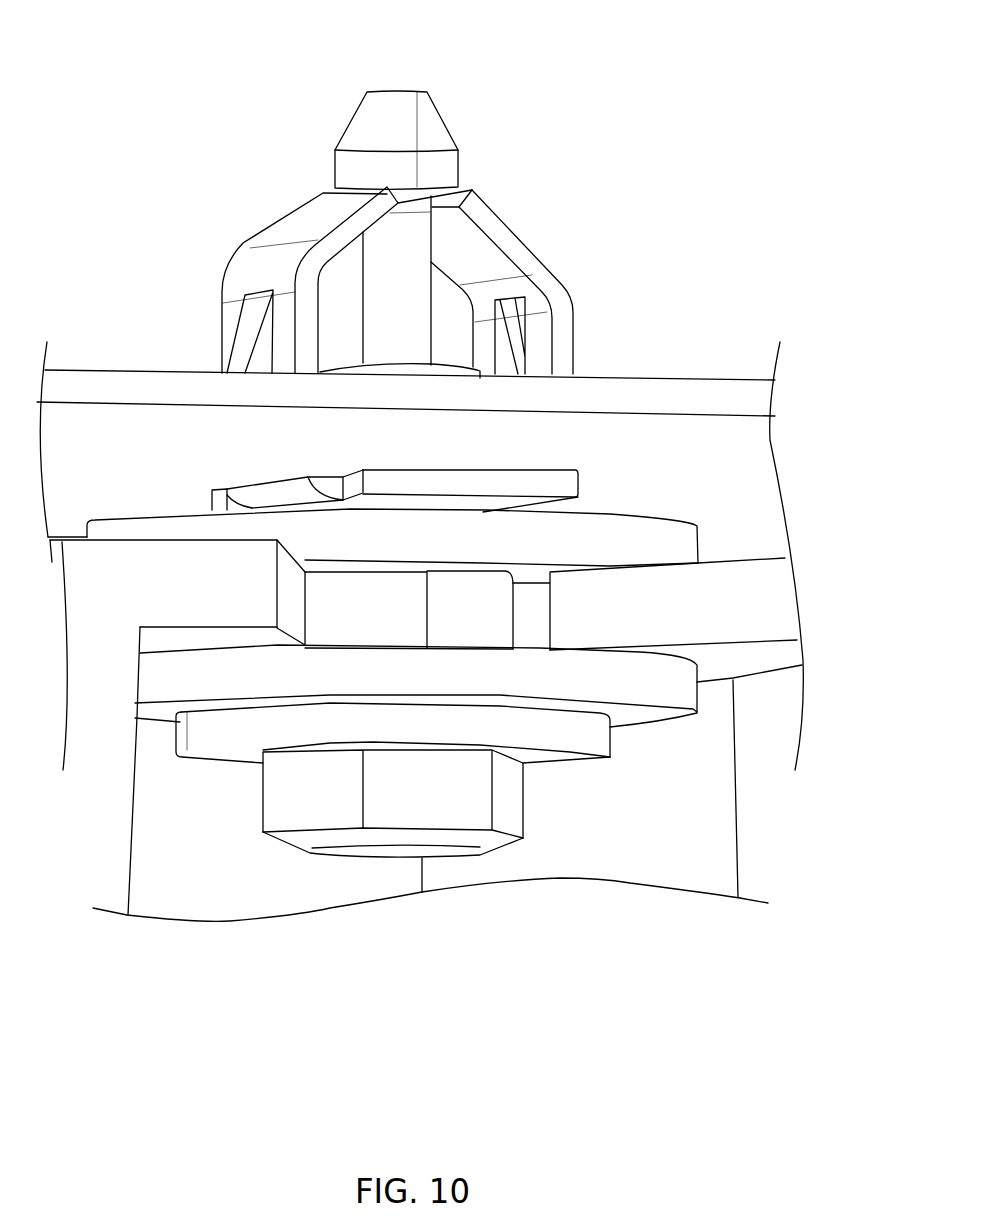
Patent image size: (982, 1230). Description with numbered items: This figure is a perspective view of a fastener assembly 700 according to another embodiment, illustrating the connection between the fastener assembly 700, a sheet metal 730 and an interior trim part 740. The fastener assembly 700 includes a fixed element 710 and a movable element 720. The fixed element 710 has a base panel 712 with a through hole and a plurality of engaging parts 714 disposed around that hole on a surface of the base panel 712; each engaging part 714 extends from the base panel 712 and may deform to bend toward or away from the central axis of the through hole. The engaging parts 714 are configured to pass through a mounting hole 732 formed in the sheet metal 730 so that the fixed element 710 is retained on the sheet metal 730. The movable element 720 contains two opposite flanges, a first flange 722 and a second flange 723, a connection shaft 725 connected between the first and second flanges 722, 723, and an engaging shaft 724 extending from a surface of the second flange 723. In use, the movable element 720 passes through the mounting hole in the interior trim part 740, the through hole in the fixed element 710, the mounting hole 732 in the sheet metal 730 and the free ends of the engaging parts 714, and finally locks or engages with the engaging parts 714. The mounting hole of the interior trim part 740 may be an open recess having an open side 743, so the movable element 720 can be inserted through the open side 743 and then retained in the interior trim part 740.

The fastener assembly 700 is at (707, 57).
The fixed element 710 is at (577, 335).
The engaging parts 714 is at (508, 228).
The engaging shaft 724 is at (402, 93).
The sheet metal 730 is at (775, 399).
The base panel 712 is at (578, 490).
The mounting hole 732 is at (213, 492).
The second flange 723 is at (700, 541).
The interior trim part 740 is at (778, 598).
The open side 743 is at (292, 602).
The connection shaft 725 is at (390, 617).
The first flange 722 is at (703, 700).
The movable element 720 is at (558, 763).